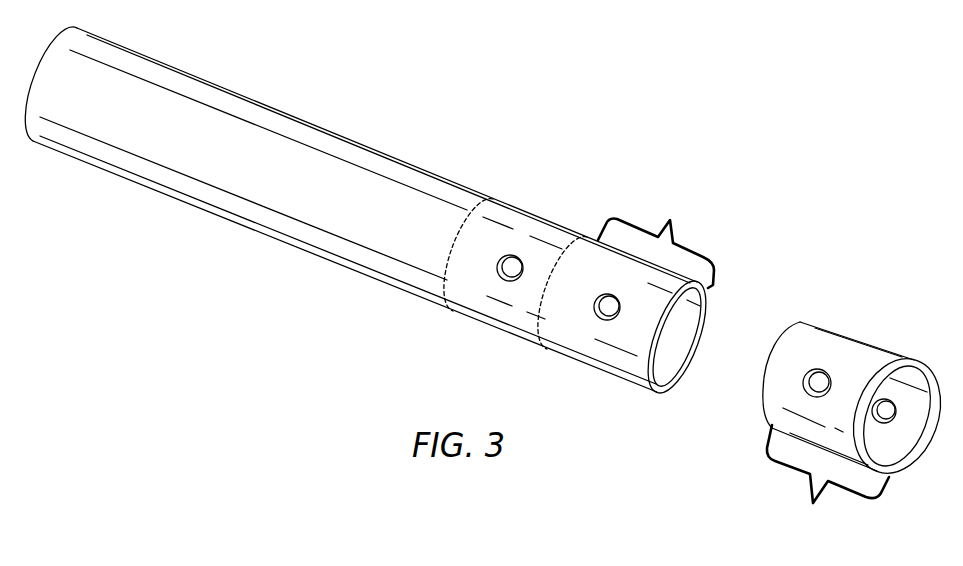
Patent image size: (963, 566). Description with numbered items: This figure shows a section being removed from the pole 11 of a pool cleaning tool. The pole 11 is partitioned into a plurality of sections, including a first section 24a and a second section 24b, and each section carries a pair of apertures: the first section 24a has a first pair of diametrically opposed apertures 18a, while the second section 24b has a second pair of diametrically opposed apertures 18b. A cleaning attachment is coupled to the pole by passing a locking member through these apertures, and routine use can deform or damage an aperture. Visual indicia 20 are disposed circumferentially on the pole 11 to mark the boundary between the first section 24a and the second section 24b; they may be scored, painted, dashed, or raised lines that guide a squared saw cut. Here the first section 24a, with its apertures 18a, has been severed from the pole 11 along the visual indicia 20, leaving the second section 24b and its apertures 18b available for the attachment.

The pole 11 is at (633, 146).
The visual indicia 20 is at (457, 253).
The second pair of diametrically opposed apertures 18b is at (585, 318).
The second section 24b is at (656, 241).
The first section 24a is at (859, 435).
The first pair of diametrically opposed apertures 18a is at (801, 379).